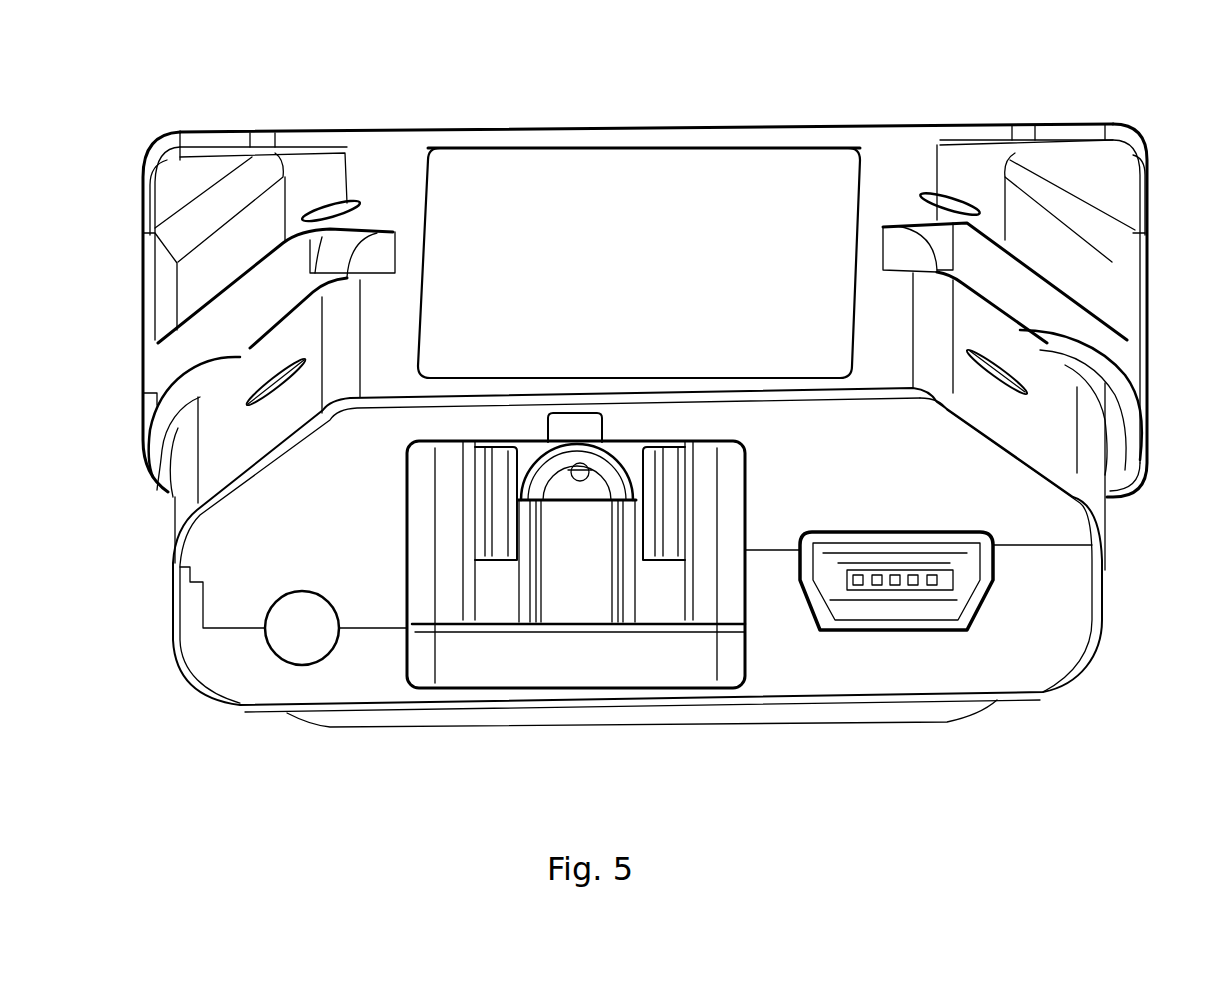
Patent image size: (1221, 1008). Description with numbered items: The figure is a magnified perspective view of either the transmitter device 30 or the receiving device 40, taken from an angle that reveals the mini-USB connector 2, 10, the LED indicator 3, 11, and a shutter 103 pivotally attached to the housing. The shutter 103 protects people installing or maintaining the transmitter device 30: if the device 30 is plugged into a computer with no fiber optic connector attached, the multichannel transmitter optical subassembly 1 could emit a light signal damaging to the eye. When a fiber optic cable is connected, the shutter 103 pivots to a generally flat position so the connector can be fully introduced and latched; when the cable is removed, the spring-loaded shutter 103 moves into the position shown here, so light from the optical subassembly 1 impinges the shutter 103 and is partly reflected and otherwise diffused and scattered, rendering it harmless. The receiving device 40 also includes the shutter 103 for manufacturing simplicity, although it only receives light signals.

The transmitter device 30 is at (645, 390).
The receiving device 40 is at (868, 128).
The LED indicator 3 is at (234, 690).
The LED indicator 11 is at (287, 653).
The shutter 103 is at (562, 600).
The multichannel transmitter optical subassembly 1 is at (592, 478).
The mini-USB connector 2 is at (1009, 623).
The mini-USB connector 10 is at (957, 610).